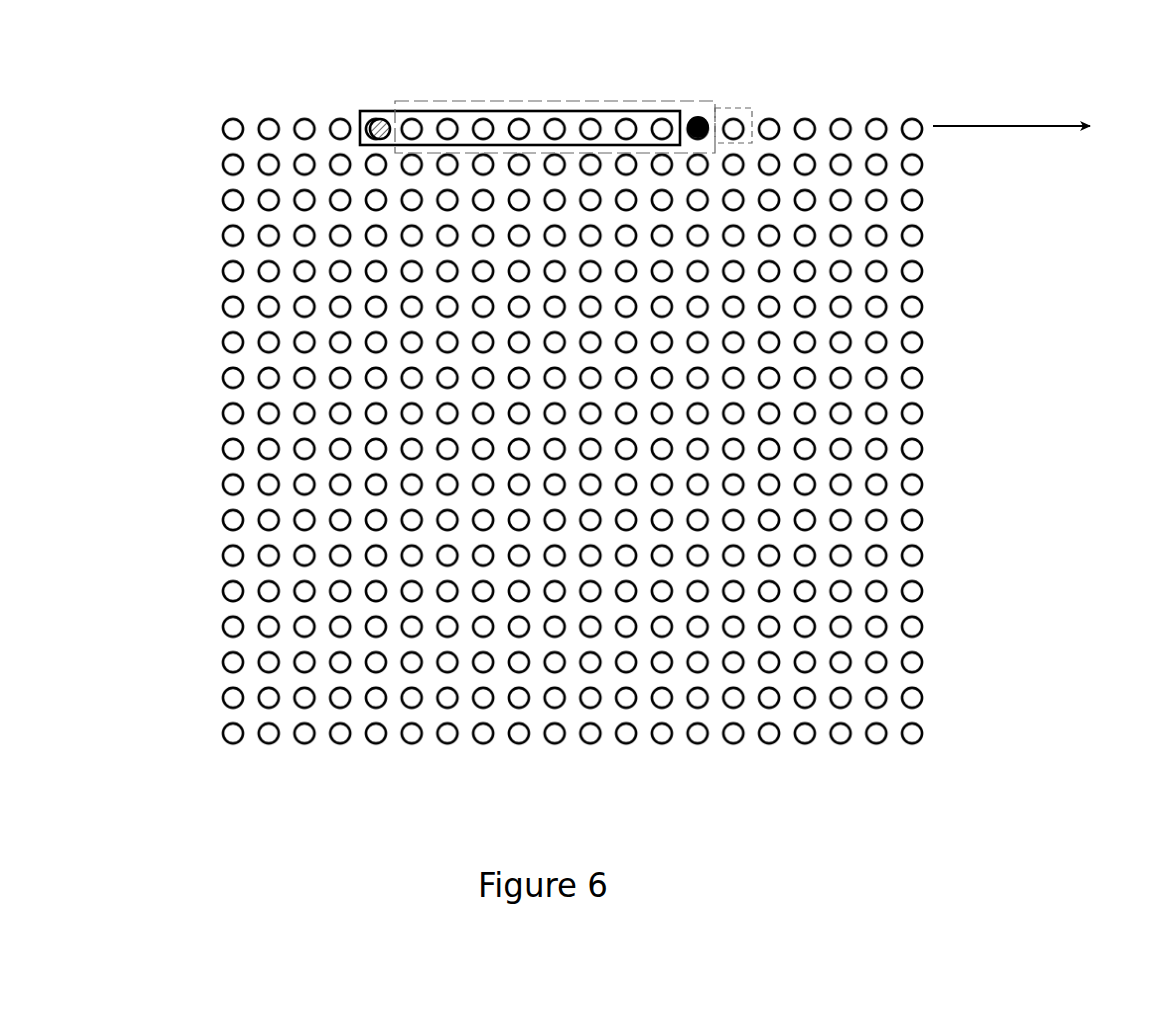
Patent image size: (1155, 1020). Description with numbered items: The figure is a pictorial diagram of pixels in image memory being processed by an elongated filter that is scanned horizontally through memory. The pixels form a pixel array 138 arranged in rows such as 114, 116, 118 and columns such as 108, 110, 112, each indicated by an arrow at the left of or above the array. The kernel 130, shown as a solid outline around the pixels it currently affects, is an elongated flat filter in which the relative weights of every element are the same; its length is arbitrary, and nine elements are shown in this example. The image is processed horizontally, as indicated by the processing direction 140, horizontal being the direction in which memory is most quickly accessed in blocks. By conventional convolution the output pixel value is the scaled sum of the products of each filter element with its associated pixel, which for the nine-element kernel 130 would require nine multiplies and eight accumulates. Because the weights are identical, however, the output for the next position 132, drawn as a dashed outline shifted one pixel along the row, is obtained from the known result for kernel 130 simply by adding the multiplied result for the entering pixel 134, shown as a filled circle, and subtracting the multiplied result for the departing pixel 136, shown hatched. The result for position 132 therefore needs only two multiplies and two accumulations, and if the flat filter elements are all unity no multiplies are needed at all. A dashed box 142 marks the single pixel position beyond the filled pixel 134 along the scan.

The column 108 is at (233, 103).
The column 110 is at (269, 103).
The column 112 is at (305, 103).
The row 114 is at (173, 130).
The row 116 is at (173, 166).
The row 118 is at (173, 202).
The kernel 130 is at (458, 108).
The next filter position 132 is at (553, 100).
The pixel 134 is at (703, 115).
The pixel 136 is at (383, 119).
The pixel array 138 is at (631, 431).
The horizontal processing direction 140 is at (1005, 126).
The next pixel region 142 is at (752, 108).